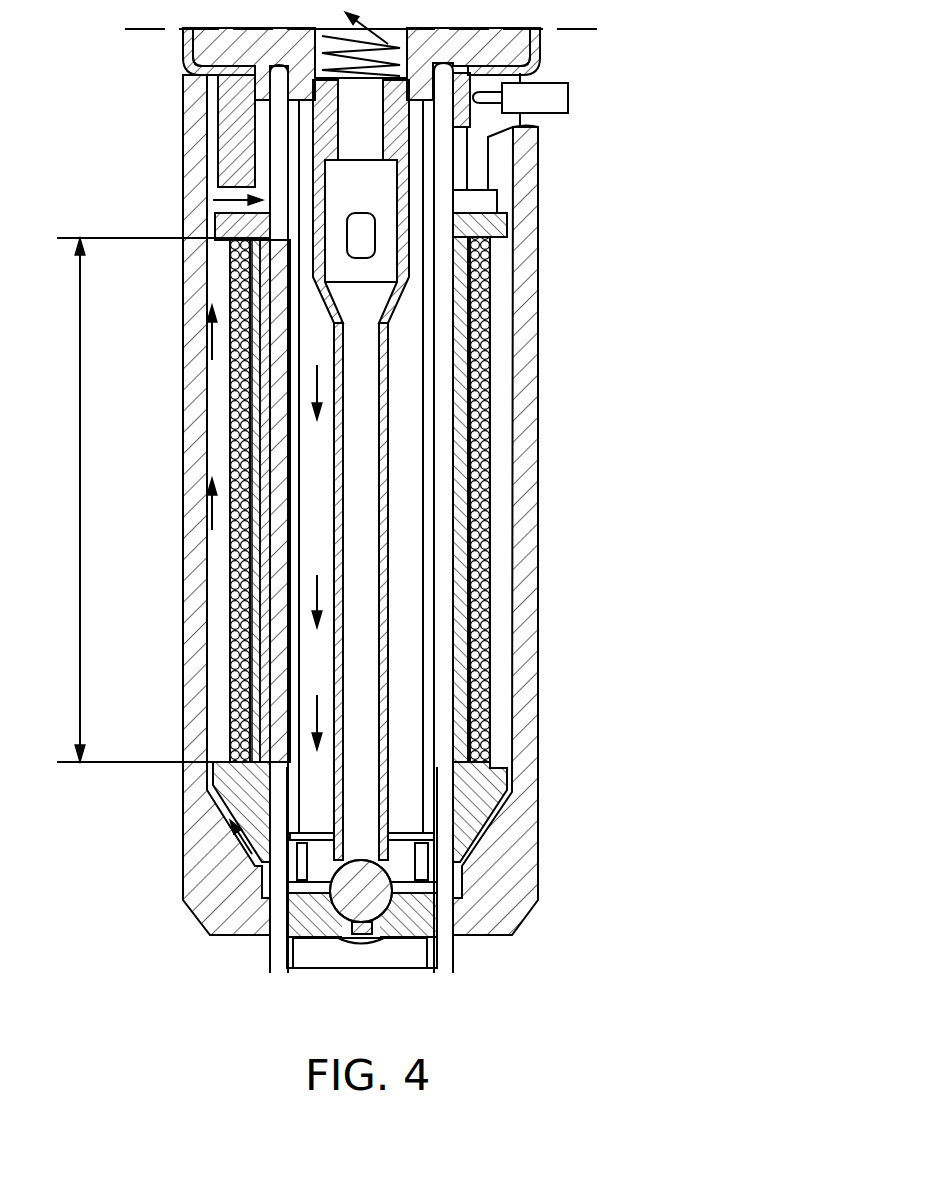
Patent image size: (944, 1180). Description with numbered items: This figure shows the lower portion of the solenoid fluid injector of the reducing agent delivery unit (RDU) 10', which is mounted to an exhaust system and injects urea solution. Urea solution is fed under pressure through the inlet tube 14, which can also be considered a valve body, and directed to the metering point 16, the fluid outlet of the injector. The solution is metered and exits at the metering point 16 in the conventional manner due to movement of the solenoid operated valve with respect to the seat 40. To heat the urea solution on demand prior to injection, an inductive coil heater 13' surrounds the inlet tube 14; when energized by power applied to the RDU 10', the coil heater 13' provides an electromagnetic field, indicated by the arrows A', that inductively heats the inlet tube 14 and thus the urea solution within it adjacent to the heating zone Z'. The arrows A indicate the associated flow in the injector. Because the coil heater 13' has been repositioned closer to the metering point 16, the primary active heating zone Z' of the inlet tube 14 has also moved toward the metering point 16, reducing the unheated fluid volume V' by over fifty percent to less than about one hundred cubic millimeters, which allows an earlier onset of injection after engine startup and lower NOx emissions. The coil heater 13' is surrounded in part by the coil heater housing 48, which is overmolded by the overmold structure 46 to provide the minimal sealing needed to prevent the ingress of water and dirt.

The reducing agent delivery unit (RDU) 10' is at (358, 521).
The inductive coil heater 13' is at (419, 417).
The inlet tube 14 is at (440, 560).
The unheated fluid volume V' is at (466, 466).
The arrows A is at (224, 557).
The arrows indicating electromagnetic field A' is at (191, 362).
The heating zone Z' is at (163, 500).
The coil heater housing 48 is at (207, 793).
The overmold structure 46 is at (207, 862).
The seat 40 is at (430, 947).
The metering point 16 is at (361, 936).